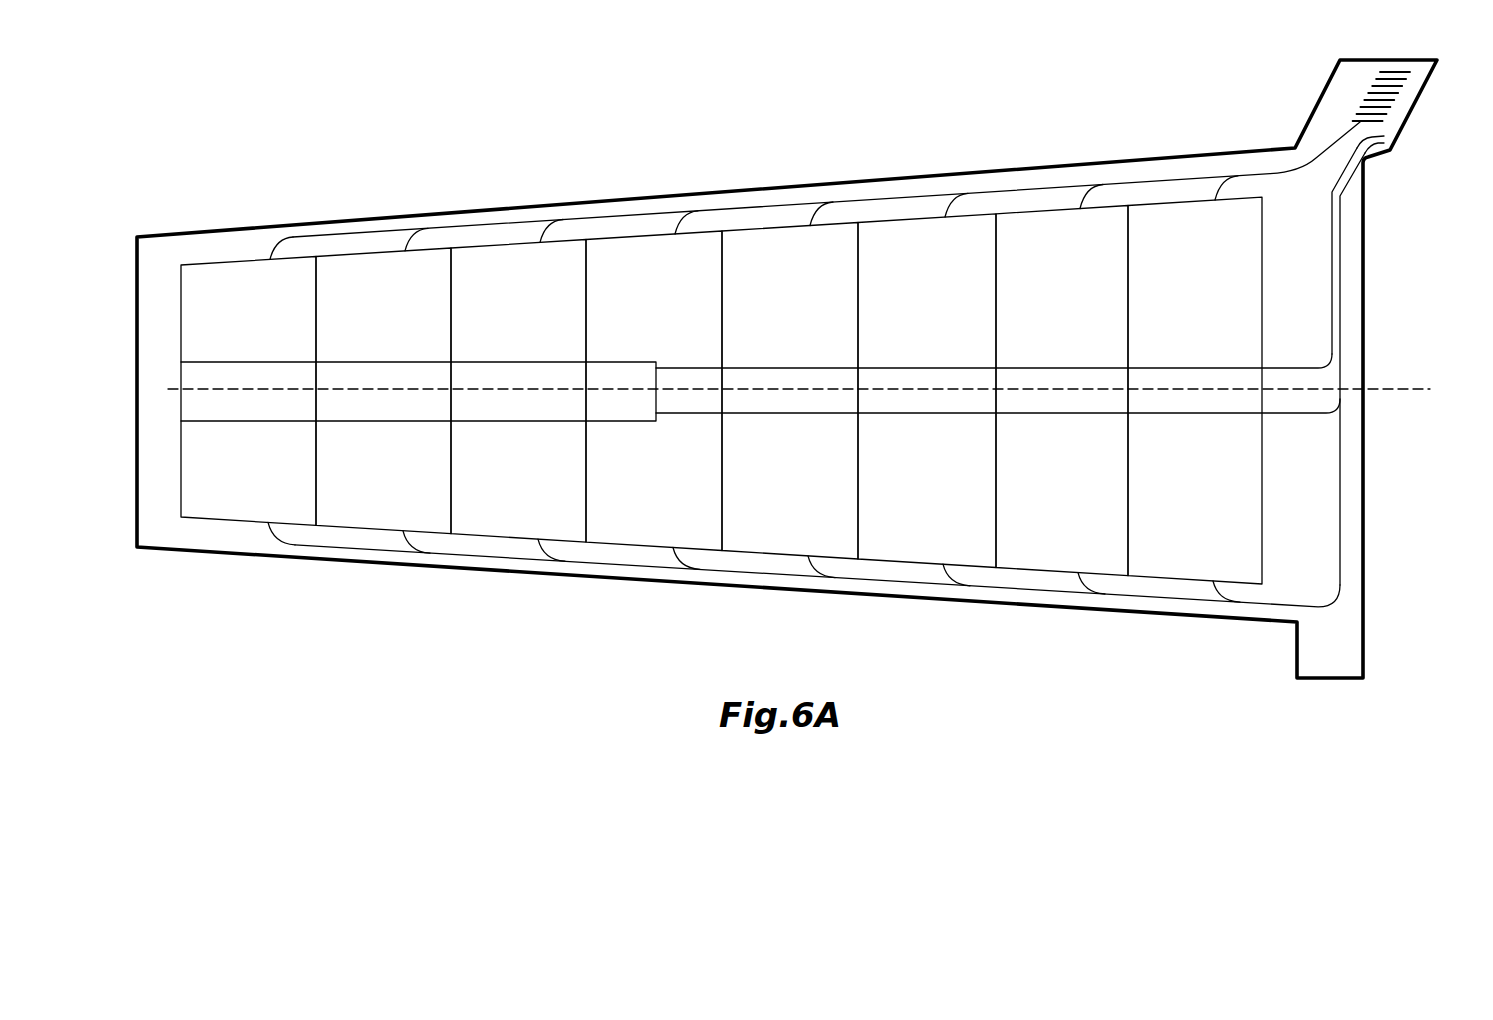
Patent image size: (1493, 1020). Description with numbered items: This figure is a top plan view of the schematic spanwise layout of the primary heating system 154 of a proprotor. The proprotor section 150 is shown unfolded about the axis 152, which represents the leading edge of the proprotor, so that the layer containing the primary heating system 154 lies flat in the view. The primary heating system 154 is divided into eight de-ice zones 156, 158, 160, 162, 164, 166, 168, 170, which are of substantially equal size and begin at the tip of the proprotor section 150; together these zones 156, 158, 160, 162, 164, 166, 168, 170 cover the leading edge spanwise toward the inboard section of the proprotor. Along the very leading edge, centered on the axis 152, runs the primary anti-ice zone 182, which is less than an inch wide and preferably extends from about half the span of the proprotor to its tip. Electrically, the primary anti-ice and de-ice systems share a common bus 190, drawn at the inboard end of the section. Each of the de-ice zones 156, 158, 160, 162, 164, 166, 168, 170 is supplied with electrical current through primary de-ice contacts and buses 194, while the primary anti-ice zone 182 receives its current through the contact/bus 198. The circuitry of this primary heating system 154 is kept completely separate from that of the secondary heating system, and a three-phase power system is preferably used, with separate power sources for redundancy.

The proprotor section 150 is at (1018, 145).
The axis 152 is at (1383, 388).
The primary heating system 154 is at (1067, 576).
The de-ice zone 156 is at (235, 497).
The de-ice zone 158 is at (378, 508).
The de-ice zone 160 is at (518, 520).
The de-ice zone 162 is at (657, 537).
The de-ice zone 164 is at (790, 540).
The de-ice zone 166 is at (928, 545).
The de-ice zone 168 is at (1028, 547).
The de-ice zone 170 is at (1192, 562).
The primary anti-ice zone 182 is at (268, 373).
The common bus 190 is at (1341, 187).
The primary de-ice contacts and buses 194 is at (1426, 64).
The contact/bus 198 is at (1385, 137).